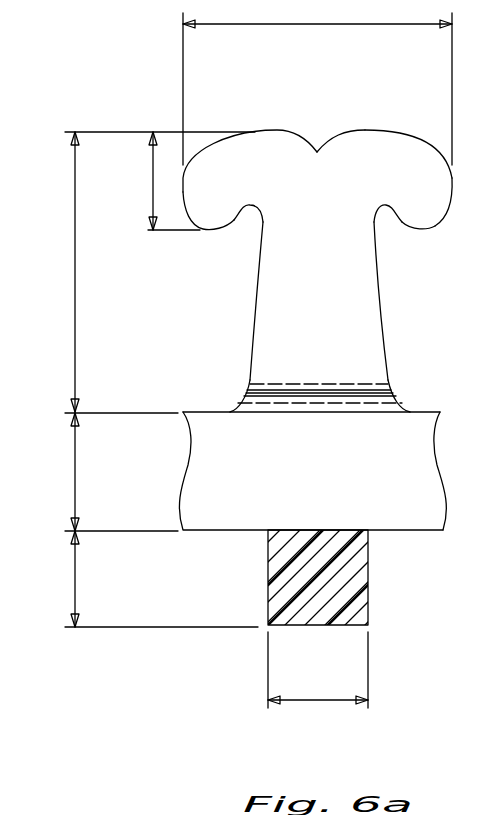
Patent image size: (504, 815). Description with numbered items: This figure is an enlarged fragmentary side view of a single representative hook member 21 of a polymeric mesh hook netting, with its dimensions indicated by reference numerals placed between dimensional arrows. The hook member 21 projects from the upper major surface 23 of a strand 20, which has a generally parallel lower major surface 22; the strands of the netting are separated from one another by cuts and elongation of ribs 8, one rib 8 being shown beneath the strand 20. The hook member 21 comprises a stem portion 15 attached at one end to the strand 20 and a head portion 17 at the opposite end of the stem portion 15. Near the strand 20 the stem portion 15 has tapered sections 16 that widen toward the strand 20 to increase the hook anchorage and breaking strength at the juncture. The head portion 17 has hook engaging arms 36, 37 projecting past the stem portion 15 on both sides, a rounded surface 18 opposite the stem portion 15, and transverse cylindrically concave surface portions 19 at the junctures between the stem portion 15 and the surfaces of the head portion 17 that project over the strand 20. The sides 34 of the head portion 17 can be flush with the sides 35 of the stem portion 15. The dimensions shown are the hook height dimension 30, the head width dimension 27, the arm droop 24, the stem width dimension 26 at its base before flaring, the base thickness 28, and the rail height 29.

The rib 8 is at (322, 626).
The stem portion 15 is at (380, 293).
The tapered sections 16 is at (242, 400).
The head portion 17 is at (422, 138).
The rounded surface 18 is at (297, 128).
The transverse cylindrically concave surface portions 19 is at (386, 206).
The strand 20 is at (185, 472).
The hook member 21 is at (357, 122).
The lower major surface 22 is at (422, 533).
The upper major surface 23 is at (192, 410).
The arm droop 24 is at (151, 183).
The width dimension 26 is at (322, 703).
The width dimension 27 is at (255, 27).
The base thickness 28 is at (73, 475).
The rail height 29 is at (73, 578).
The height dimension 30 is at (73, 279).
The sides of the head portion 34 is at (435, 193).
The sides of the stem portion 35 is at (366, 322).
The hook engaging arm 36 is at (425, 210).
The hook engaging arm 37 is at (212, 222).